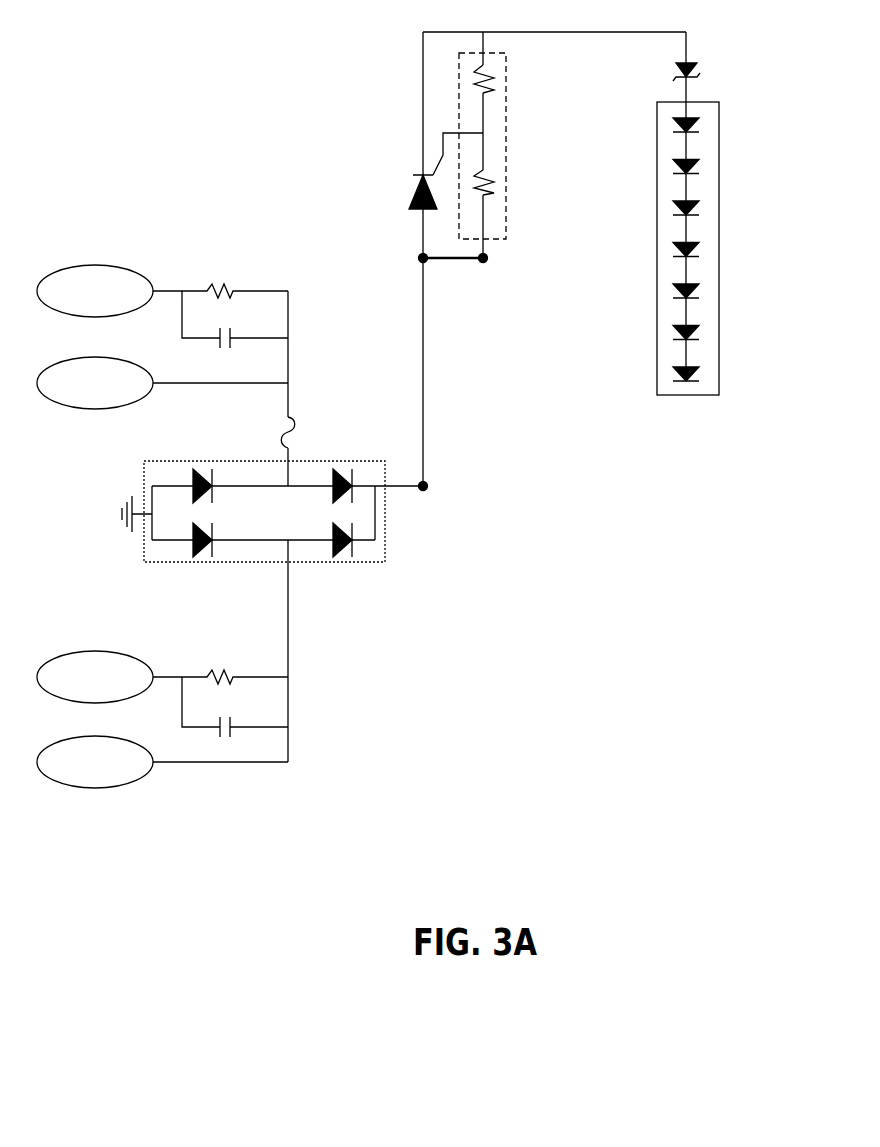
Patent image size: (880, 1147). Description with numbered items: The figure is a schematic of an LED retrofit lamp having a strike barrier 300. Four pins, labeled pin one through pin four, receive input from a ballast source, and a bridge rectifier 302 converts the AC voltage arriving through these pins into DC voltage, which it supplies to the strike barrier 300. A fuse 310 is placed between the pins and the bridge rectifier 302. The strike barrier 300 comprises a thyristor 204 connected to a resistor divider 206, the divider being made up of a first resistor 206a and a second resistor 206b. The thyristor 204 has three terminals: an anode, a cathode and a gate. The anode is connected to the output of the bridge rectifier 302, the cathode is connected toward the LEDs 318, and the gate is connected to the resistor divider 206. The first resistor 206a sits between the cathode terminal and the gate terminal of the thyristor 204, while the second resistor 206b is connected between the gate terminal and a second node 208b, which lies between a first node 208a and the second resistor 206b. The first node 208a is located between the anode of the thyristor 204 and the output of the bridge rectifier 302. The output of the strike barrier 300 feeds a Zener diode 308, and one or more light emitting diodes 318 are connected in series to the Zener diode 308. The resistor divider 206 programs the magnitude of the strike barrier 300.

The strike barrier 300 is at (557, 395).
The thyristor 204 is at (410, 195).
The resistor divider 206 is at (505, 75).
The first resistor 206a is at (488, 90).
The second resistor 206b is at (488, 190).
The first node 208a is at (418, 259).
The second node 208b is at (500, 268).
The Zener diode 308 is at (705, 66).
The light emitting diodes 318 is at (723, 226).
The fuse 310 is at (283, 436).
The bridge rectifier 302 is at (313, 563).